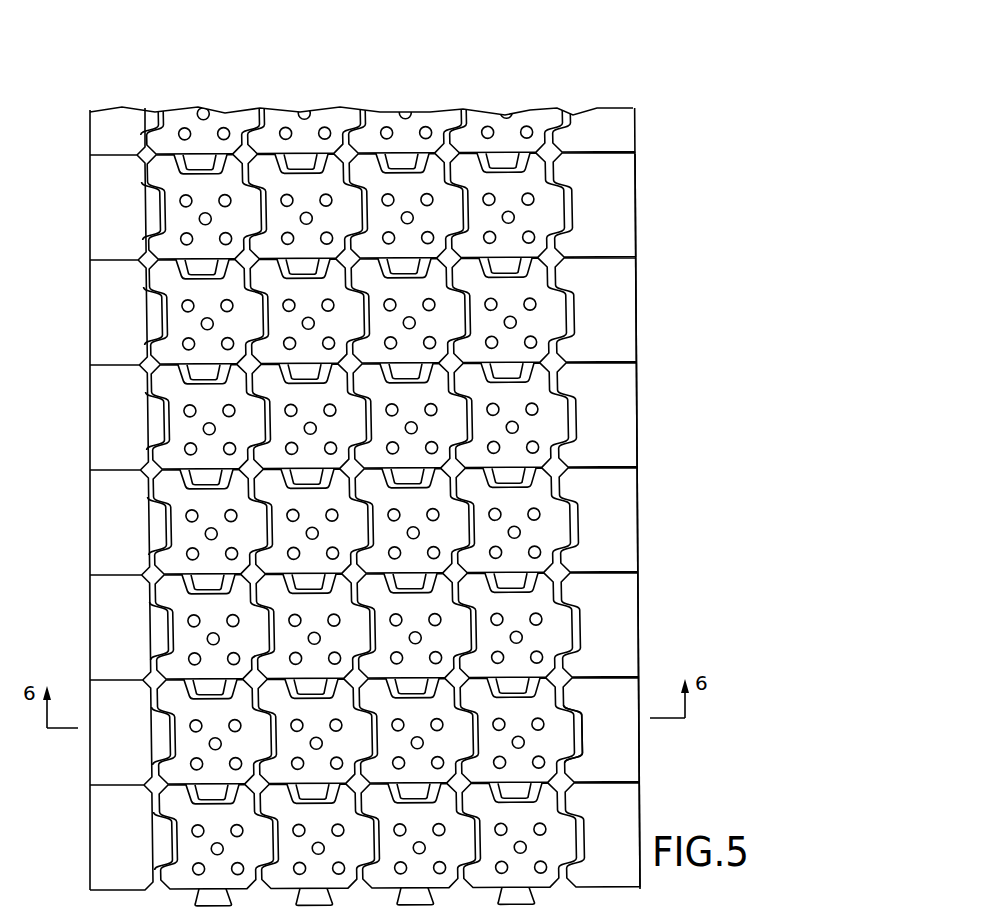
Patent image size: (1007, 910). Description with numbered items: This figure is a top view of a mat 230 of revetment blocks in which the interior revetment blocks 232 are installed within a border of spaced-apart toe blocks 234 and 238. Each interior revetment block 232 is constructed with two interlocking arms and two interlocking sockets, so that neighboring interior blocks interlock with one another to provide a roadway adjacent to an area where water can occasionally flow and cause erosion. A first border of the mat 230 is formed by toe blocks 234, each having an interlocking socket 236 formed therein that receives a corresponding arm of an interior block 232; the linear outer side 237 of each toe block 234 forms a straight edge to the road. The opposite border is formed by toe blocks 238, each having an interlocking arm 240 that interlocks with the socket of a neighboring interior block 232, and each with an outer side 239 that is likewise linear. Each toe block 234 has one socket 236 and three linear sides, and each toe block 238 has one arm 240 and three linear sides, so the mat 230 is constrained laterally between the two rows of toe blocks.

The mat 230 is at (53, 278).
The interior revetment block 232 is at (563, 517).
The toe block 234 is at (627, 748).
The interlocking socket 236 is at (572, 722).
The linear outer side 237 is at (640, 767).
The toe block 238 is at (103, 754).
The outer side 239 is at (90, 778).
The interlocking arm 240 is at (163, 733).